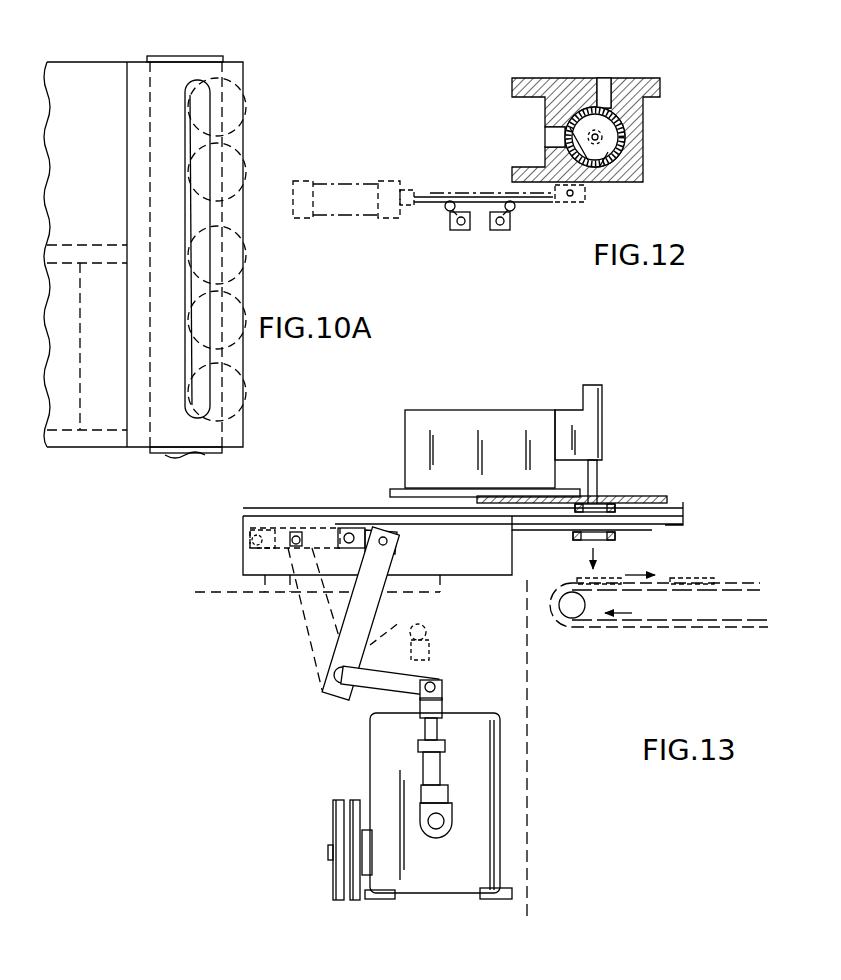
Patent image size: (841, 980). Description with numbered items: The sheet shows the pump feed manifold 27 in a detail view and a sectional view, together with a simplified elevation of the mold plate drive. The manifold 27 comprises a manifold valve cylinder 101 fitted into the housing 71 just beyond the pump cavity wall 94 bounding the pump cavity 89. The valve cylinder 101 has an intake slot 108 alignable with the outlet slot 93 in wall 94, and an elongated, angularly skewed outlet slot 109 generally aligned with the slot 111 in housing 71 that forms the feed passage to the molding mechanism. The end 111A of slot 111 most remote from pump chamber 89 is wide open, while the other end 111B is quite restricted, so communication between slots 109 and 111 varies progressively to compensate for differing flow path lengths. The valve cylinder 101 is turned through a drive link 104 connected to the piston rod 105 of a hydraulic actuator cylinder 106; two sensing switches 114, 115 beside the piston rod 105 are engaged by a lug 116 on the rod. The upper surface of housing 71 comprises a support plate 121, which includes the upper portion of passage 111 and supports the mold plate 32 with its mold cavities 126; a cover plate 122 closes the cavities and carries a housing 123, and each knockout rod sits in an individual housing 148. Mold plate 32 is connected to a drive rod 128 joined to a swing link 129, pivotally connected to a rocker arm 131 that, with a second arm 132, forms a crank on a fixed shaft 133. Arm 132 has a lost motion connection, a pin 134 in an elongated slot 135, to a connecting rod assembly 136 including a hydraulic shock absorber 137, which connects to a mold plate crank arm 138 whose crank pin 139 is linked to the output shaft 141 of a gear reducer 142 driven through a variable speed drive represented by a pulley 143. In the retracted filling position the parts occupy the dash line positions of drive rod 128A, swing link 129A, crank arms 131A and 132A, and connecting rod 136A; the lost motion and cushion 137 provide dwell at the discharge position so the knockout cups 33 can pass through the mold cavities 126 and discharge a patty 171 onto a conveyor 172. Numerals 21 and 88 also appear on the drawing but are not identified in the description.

In FIG. 13, the drive mechanism 21 is at (528, 672).
In FIG. 10A, the pump feed manifold 27 is at (247, 80).
In FIG. 12, the pump feed manifold 27 is at (658, 130).
In FIG. 13, the mold plate 32 is at (650, 495).
In FIG. 13, the knockout cups 33 is at (585, 500).
In FIG. 10A, the housing 71 is at (143, 254).
In FIG. 13, the housing 71 is at (513, 555).
In FIG. 10A, the passage 88 is at (85, 358).
In FIG. 12, the pump cavity 89 is at (545, 126).
In FIG. 12, the outlet slot 93 is at (555, 137).
In FIG. 12, the pump cavity wall 94 is at (545, 103).
In FIG. 10A, the manifold valve cylinder 101 is at (193, 56).
In FIG. 12, the manifold valve cylinder 101 is at (640, 150).
In FIG. 12, the drive link 104 is at (585, 186).
In FIG. 12, the piston rod 105 is at (542, 203).
In FIG. 12, the hydraulic actuator cylinder 106 is at (362, 185).
In FIG. 12, the intake slot 108 is at (580, 112).
In FIG. 10A, the outlet slot 109 is at (243, 227).
In FIG. 12, the outlet slot 109 is at (622, 122).
In FIG. 10A, the slot 111 is at (228, 258).
In FIG. 12, the slot 111 is at (606, 82).
In FIG. 10A, the end of slot 111A is at (205, 108).
In FIG. 10A, the other end of feed slot 111B is at (207, 385).
In FIG. 12, the sensing switch 114 is at (500, 232).
In FIG. 12, the sensing switch 115 is at (458, 232).
In FIG. 12, the lug 116 is at (458, 205).
In FIG. 12, the support plate 121 is at (660, 80).
In FIG. 13, the support plate 121 is at (363, 508).
In FIG. 13, the cover plate 122 is at (397, 490).
In FIG. 13, the housing 123 is at (510, 408).
In FIG. 13, the mold cavities 126 is at (612, 494).
In FIG. 13, the drive rod 128 is at (663, 516).
In FIG. 13, the drive rod dash line position 128A is at (252, 532).
In FIG. 13, the swing link 129 is at (385, 545).
In FIG. 13, the swing link position 129A is at (258, 540).
In FIG. 13, the rocker arm 131 is at (362, 612).
In FIG. 13, the crank arm position 131A is at (313, 610).
In FIG. 13, the crank arm 132 is at (353, 703).
In FIG. 13, the crank arm position 132A is at (418, 623).
In FIG. 13, the fixed shaft 133 is at (333, 678).
In FIG. 13, the pin 134 is at (438, 682).
In FIG. 13, the elongated slot 135 is at (443, 689).
In FIG. 13, the connecting rod assembly 136 is at (445, 710).
In FIG. 13, the connecting rod position 136A is at (432, 652).
In FIG. 13, the hydraulic shock absorber 137 is at (440, 765).
In FIG. 13, the mold plate crank arm 138 is at (455, 814).
In FIG. 13, the crank pin 139 is at (440, 832).
In FIG. 13, the output shaft 141 is at (450, 795).
In FIG. 13, the gear reducer 142 is at (380, 782).
In FIG. 13, the pulley 143 is at (334, 886).
In FIG. 13, the housing 148 is at (590, 422).
In FIG. 13, the patty 171 is at (596, 540).
In FIG. 13, the conveyor 172 is at (740, 585).